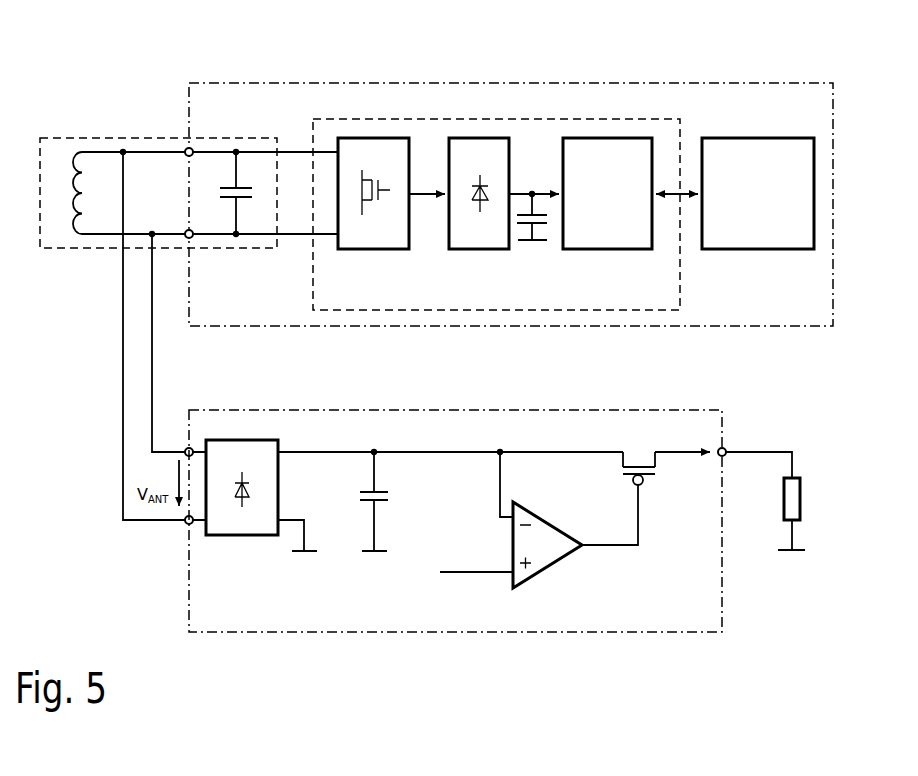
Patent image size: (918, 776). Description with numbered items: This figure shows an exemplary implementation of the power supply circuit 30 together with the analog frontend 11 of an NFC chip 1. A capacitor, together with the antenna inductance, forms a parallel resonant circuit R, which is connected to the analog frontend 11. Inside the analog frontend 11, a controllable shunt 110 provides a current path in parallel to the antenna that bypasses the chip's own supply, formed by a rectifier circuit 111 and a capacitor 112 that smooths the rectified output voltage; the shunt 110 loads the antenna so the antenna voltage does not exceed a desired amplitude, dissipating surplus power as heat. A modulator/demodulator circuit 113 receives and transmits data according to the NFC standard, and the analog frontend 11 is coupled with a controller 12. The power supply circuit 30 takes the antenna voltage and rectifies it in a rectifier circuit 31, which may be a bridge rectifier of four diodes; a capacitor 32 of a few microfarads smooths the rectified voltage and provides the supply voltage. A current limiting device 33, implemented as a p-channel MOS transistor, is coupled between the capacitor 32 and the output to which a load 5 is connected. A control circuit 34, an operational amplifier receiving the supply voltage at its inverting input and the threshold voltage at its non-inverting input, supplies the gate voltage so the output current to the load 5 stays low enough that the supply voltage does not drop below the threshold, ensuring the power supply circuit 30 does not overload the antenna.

The NFC chip 1 is at (511, 193).
The analog frontend 11 is at (496, 203).
The controllable shunt 110 is at (355, 250).
The rectifier circuit 111 is at (478, 250).
The capacitor 112 is at (542, 228).
The modulator/demodulator circuit 113 is at (612, 250).
The controller 12 is at (735, 193).
The parallel resonant circuit R is at (230, 250).
The power supply circuit 30 is at (455, 509).
The rectifier circuit 31 is at (230, 535).
The capacitor 32 is at (367, 508).
The current limiting device 33 is at (637, 448).
The control circuit 34 is at (552, 567).
The load 5 is at (803, 492).